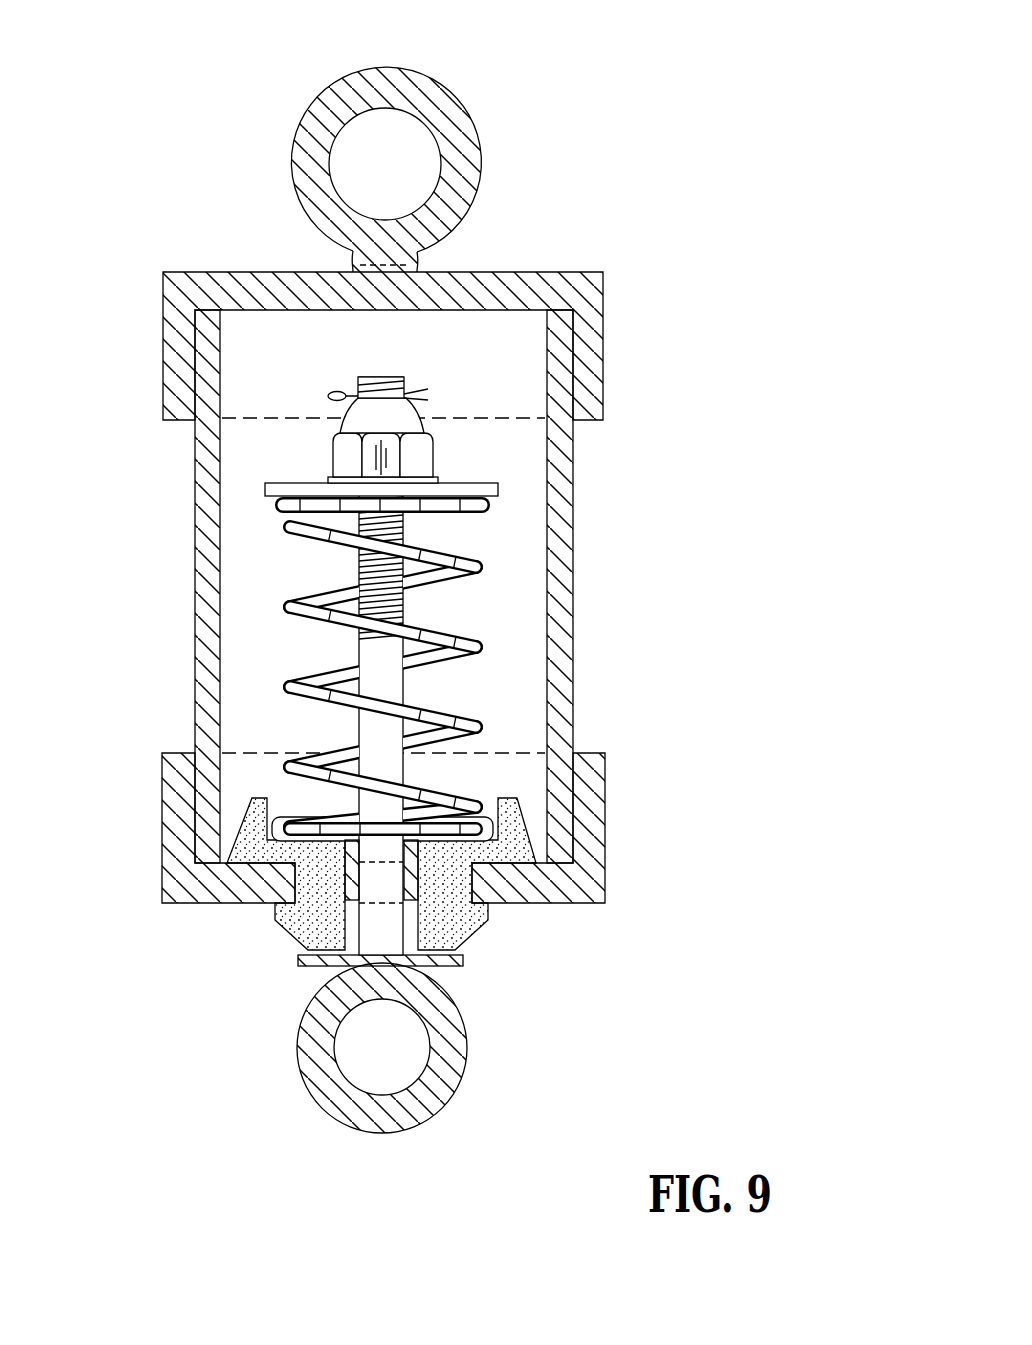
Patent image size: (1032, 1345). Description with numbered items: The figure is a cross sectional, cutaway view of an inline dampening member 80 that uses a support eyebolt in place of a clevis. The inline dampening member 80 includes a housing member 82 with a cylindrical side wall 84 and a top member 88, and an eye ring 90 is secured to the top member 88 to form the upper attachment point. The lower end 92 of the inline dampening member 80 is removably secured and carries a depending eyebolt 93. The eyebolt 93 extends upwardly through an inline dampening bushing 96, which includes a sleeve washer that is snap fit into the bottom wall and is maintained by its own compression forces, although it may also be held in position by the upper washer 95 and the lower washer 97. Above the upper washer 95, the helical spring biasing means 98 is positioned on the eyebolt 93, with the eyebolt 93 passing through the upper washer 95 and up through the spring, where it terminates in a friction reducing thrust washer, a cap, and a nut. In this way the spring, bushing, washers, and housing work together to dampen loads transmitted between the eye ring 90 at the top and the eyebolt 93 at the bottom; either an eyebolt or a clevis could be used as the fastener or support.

The inline dampening member 80 is at (141, 287).
The housing member 82 is at (573, 455).
The cylindrical side wall 84 is at (563, 527).
The top member 88 is at (522, 283).
The eye ring 90 is at (435, 98).
The lower end 92 is at (605, 835).
The eyebolt 93 is at (460, 1055).
The upper washer 95 is at (488, 810).
The inline dampening bushing 96 is at (462, 938).
The lower washer 97 is at (463, 963).
The helical spring biasing means 98 is at (487, 643).